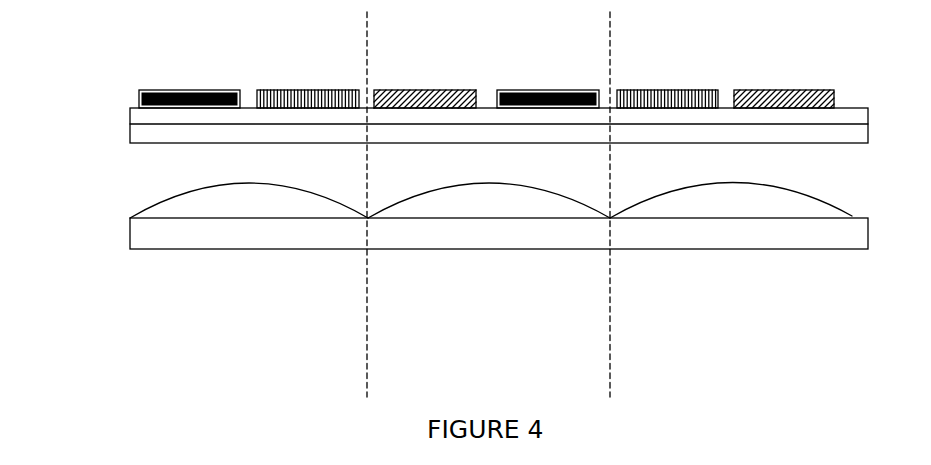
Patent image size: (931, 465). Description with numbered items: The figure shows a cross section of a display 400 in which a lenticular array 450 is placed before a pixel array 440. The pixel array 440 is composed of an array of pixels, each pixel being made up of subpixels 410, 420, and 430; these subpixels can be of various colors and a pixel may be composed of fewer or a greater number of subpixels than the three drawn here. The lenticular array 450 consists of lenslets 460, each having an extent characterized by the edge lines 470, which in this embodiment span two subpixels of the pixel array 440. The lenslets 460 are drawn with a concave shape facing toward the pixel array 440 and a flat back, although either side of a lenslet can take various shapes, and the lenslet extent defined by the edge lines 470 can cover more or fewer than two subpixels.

The display 400 is at (161, 314).
The subpixel 410 is at (180, 92).
The subpixel 420 is at (352, 90).
The subpixel 430 is at (397, 90).
The pixel array 440 is at (130, 110).
The lenticular array 450 is at (130, 234).
The lenslets 460 is at (243, 201).
The edge lines 470 is at (610, 292).